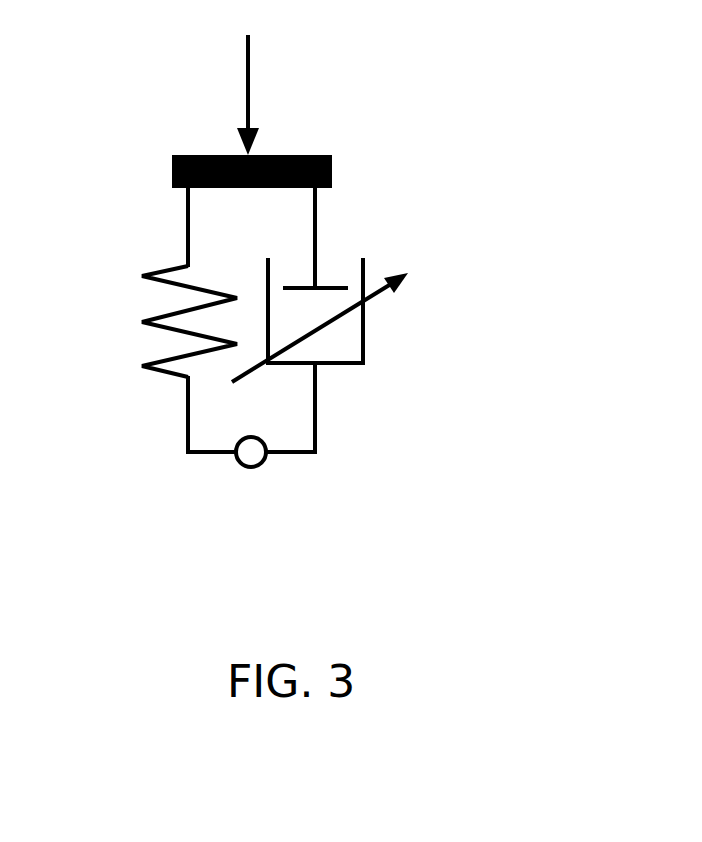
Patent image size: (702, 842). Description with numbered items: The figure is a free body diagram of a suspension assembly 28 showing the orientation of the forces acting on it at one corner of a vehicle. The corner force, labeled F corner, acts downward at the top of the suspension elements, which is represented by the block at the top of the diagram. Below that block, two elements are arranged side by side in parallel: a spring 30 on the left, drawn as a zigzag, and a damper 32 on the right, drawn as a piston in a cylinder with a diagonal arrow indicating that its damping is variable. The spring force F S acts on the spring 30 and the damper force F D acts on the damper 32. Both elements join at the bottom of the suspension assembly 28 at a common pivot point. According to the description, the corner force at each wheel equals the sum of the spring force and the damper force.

The suspension assembly 28 is at (412, 128).
The spring 30 is at (138, 273).
The damper 32 is at (367, 343).